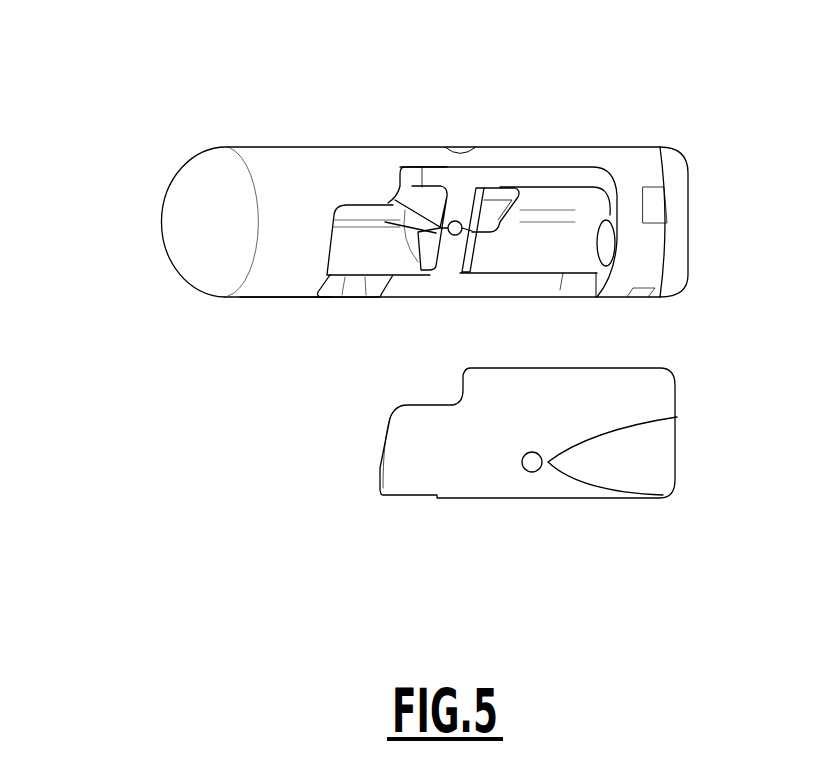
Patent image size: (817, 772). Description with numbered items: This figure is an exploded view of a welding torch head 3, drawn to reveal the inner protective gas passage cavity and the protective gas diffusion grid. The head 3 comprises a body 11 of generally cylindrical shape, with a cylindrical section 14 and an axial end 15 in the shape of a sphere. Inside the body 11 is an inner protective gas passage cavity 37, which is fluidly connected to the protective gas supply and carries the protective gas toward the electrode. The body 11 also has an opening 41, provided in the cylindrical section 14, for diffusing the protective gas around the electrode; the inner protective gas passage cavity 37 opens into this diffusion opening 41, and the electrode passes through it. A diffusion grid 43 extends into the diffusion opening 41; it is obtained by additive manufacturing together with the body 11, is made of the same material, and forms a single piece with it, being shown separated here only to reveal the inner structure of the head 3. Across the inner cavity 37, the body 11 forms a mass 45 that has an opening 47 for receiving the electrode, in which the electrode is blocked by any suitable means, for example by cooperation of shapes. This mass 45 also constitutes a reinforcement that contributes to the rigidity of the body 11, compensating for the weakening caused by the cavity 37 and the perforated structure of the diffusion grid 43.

The head 3 is at (136, 113).
The body 11 is at (279, 140).
The cylindrical section 14 is at (287, 300).
The axial end 15 is at (197, 238).
The inner protective gas passage cavity 37 is at (548, 205).
The opening 41 is at (355, 283).
The diffusion grid 43 is at (643, 457).
The mass 45 is at (397, 198).
The opening 47 is at (496, 220).